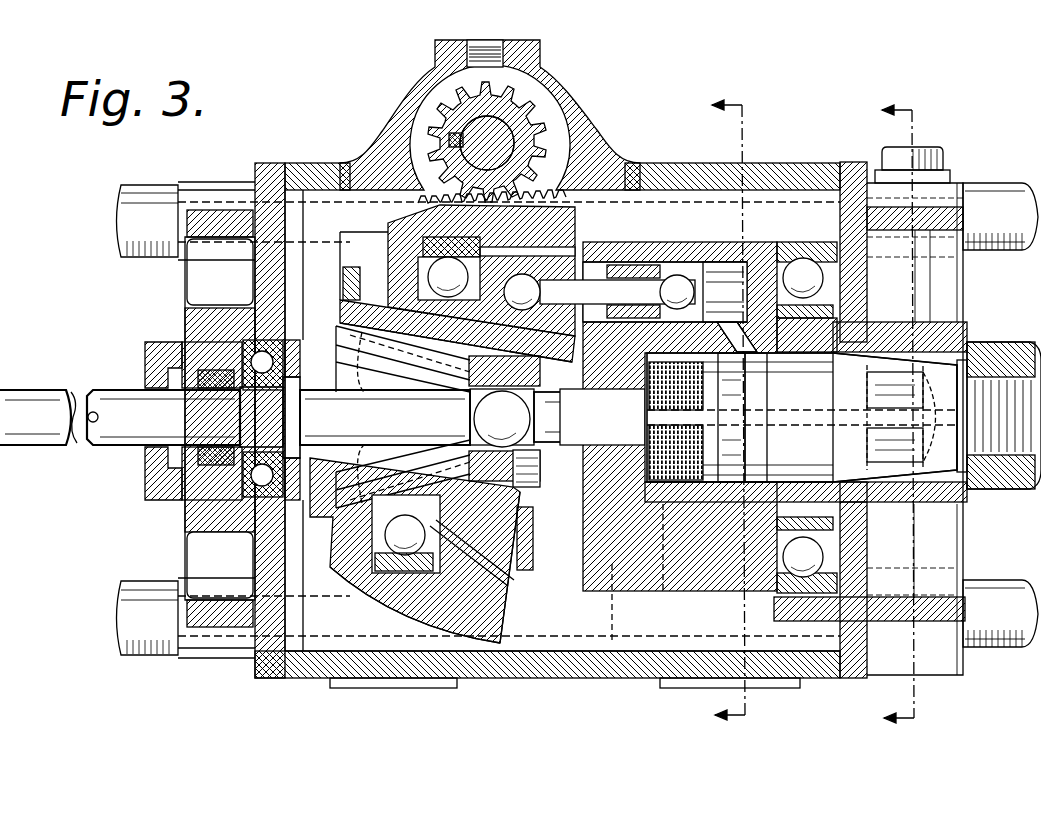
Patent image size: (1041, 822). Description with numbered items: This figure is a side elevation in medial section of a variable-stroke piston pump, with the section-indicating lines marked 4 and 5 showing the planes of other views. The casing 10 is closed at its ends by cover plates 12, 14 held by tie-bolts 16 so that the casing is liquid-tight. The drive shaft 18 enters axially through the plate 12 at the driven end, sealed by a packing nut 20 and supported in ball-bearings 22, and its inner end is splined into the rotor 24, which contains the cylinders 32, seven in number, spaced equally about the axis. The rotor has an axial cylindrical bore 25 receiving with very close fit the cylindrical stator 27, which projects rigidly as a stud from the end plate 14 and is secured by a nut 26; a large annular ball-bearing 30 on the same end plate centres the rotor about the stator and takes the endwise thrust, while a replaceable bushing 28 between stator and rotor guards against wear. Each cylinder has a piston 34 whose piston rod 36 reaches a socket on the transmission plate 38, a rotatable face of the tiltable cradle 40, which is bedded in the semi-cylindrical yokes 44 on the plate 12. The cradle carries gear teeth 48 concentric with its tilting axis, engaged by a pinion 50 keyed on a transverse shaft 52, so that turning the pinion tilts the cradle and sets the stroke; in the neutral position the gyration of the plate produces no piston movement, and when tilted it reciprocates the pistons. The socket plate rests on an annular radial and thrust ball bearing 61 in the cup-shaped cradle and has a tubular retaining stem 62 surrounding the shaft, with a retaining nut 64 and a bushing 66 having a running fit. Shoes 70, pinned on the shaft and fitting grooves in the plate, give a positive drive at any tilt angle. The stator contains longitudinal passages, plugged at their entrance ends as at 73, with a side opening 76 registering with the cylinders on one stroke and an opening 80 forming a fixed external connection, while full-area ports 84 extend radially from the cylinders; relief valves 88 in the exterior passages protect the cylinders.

The casing 10 is at (331, 163).
The end cover plate 12 is at (263, 285).
The end cover plate 14 is at (930, 288).
The tie-bolts 16 is at (118, 214).
The drive shaft 18 is at (104, 412).
The packing nut 20 is at (158, 360).
The ball-bearings 22 is at (200, 480).
The rotor 24 is at (613, 580).
The axial cylindrical bore 25 is at (664, 592).
The nut 26 is at (998, 352).
The stator 27 is at (807, 417).
The bushing 28 is at (812, 512).
The annular ball-bearing 30 is at (826, 283).
The cylinders 32 is at (733, 244).
The piston 34 is at (690, 230).
The piston rod 36 is at (620, 232).
The transmission plate 38 is at (506, 612).
The cradle 40 is at (402, 622).
The yokes 44 is at (345, 372).
The gear teeth 48 is at (540, 197).
The pinion 50 is at (523, 117).
The shaft 52 is at (522, 146).
The annular radial and thrust ball bearing 61 is at (434, 424).
The tubular retaining stem 62 is at (345, 313).
The retaining nut 64 is at (343, 283).
The bushing 66 is at (392, 278).
The shoes 70 is at (469, 376).
The plug 73 is at (612, 642).
The side opening 76 is at (748, 426).
The opening 80 is at (910, 400).
The cylinder ports 84 is at (850, 327).
The relief valves 88 is at (926, 176).
The section line 4- 4 is at (712, 412).
The section line 5- 5 is at (887, 414).